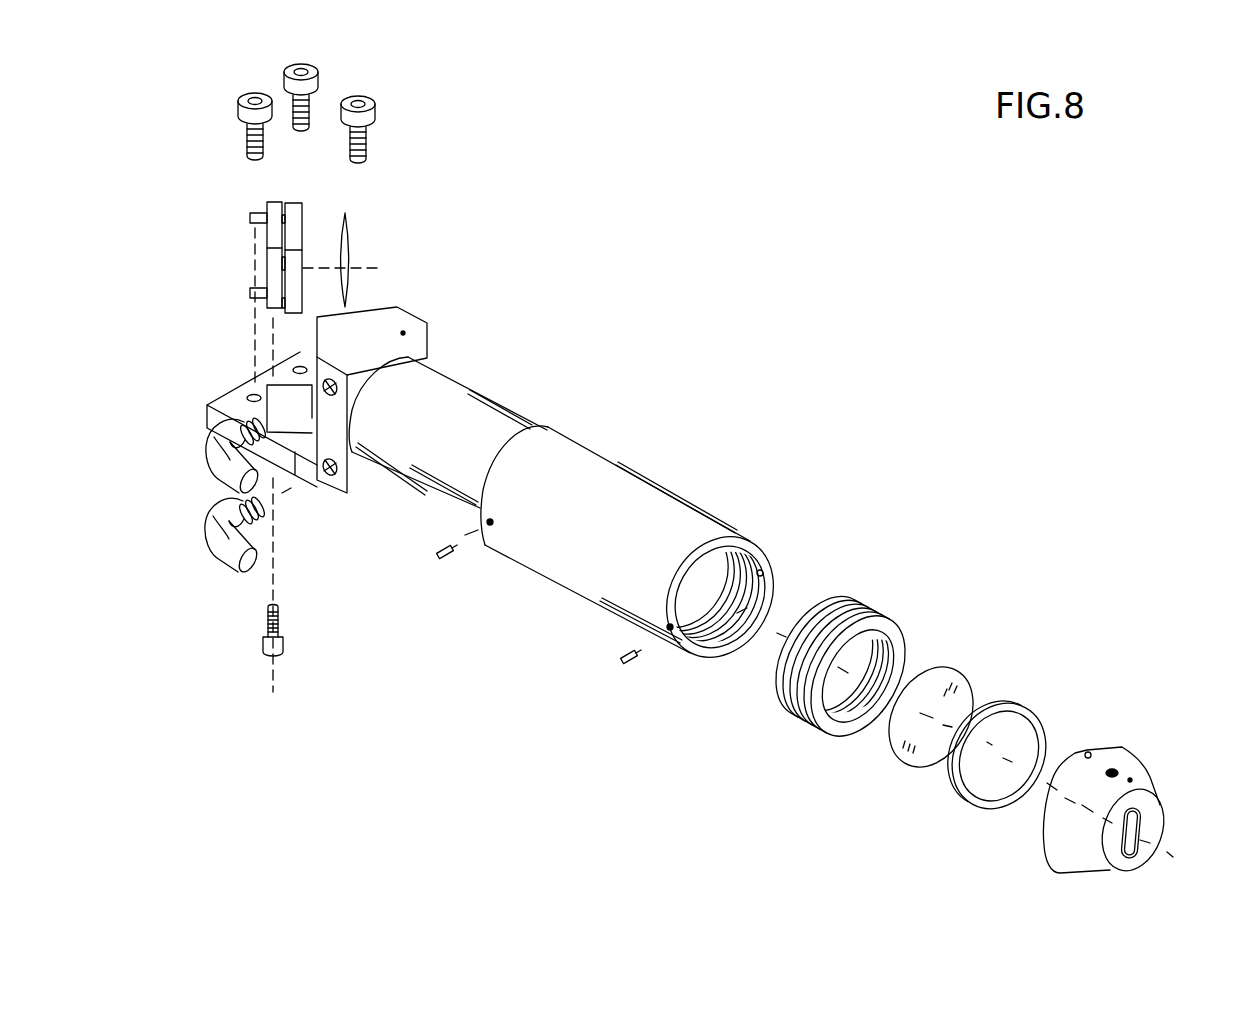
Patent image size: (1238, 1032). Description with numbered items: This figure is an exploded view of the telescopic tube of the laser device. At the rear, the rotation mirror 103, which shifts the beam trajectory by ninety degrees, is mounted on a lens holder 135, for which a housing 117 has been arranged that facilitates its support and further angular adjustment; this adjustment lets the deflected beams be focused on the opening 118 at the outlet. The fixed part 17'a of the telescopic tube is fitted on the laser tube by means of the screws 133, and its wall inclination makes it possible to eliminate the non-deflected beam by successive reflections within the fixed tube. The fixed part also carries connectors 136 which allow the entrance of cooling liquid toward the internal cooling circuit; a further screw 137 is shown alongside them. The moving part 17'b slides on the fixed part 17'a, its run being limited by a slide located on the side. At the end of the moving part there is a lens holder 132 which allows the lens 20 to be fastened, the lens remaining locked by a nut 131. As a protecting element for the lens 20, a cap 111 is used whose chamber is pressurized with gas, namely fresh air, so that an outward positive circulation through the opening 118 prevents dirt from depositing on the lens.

The screws 133 is at (367, 120).
The lens holder 135 is at (295, 228).
The rotation mirror 103 is at (352, 253).
The housing 117 is at (297, 407).
The fixed part 17'a is at (533, 391).
The moving part 17'b is at (637, 510).
The lens holder 132 is at (847, 598).
The lens 20 is at (938, 680).
The nut 131 is at (1005, 700).
The cap 111 is at (1093, 782).
The opening 118 is at (1132, 841).
The connectors 136 is at (258, 565).
The screw 137 is at (283, 652).